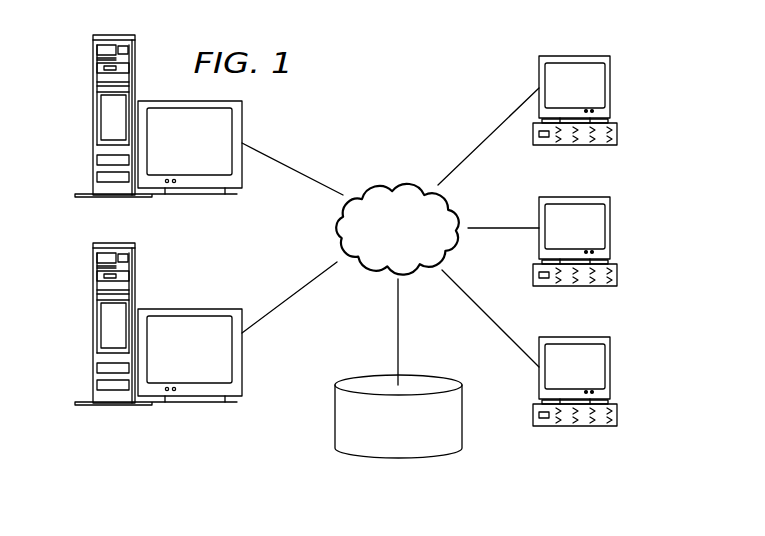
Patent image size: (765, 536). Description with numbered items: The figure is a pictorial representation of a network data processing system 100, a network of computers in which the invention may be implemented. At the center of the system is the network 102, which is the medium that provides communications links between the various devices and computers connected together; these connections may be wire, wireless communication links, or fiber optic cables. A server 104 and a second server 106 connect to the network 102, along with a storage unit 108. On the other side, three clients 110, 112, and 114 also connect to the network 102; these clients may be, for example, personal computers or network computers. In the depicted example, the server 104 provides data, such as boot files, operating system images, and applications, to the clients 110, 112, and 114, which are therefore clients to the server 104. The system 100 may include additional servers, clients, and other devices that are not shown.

The network data processing system 100 is at (451, 61).
The network 102 is at (370, 178).
The server 104 is at (93, 117).
The server 106 is at (93, 326).
The storage unit 108 is at (382, 458).
The client 110 is at (612, 87).
The client 112 is at (612, 228).
The client 114 is at (612, 368).